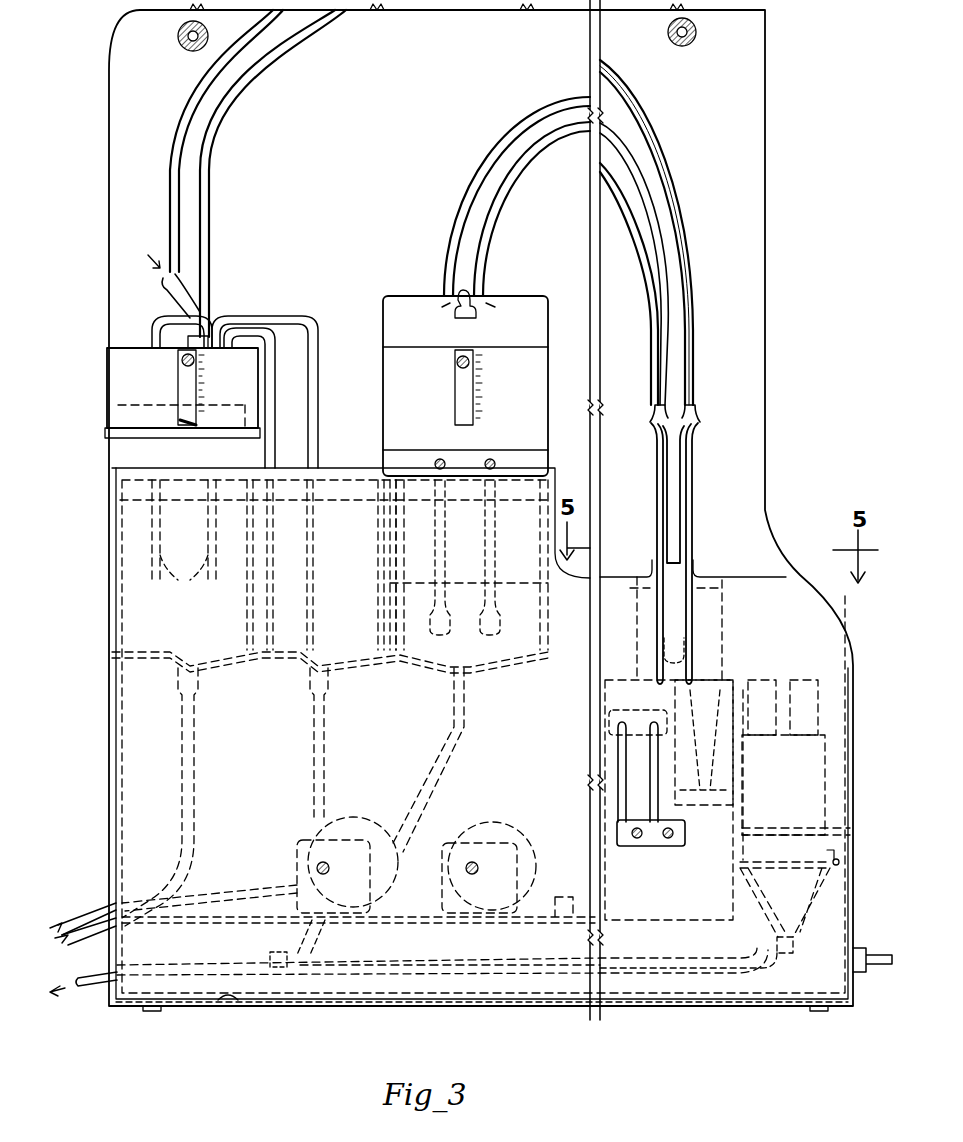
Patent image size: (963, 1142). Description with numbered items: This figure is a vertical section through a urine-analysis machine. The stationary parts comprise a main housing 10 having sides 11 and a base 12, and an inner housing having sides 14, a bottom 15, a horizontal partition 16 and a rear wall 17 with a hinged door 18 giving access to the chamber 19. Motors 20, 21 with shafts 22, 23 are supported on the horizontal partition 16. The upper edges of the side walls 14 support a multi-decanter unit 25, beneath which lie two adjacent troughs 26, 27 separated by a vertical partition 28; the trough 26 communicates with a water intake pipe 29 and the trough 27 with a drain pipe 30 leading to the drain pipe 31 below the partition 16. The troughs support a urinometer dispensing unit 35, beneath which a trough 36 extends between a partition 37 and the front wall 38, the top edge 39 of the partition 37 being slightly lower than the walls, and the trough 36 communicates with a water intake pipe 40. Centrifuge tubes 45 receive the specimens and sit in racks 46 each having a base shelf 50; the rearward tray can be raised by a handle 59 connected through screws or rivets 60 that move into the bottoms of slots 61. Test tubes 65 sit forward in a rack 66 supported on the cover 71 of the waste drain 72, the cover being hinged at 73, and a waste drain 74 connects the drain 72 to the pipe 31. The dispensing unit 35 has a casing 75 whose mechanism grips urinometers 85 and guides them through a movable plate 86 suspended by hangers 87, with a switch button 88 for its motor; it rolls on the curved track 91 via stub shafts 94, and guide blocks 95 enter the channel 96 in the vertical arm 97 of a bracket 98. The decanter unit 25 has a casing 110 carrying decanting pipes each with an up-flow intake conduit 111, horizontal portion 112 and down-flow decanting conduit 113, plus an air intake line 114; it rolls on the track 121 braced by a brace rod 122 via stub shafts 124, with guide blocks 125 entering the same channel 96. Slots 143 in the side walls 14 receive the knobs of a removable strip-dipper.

The main housing 10 is at (705, 1012).
The sides 11 is at (410, 186).
The base 12 is at (287, 1008).
The sides 14 is at (135, 505).
The bottom 15 is at (230, 1010).
The horizontal partition 16 is at (490, 925).
The rear wall 17 is at (112, 610).
The hinged door 18 is at (118, 785).
The chamber 19 is at (128, 762).
The motor 20 is at (348, 818).
The motor 21 is at (497, 825).
The shaft 22 is at (316, 866).
The shaft 23 is at (466, 866).
The multi-decanter unit 25 is at (100, 398).
The trough 26 is at (130, 578).
The trough 27 is at (335, 497).
The vertical partition 28 is at (247, 603).
The water intake pipe 29 is at (194, 762).
The drain pipe 30 is at (325, 748).
The drain pipe 31 is at (100, 990).
The urinometer dispensing unit 35 is at (383, 300).
The trough 36 is at (460, 660).
The partition 37 is at (396, 583).
The front wall 38 is at (548, 620).
The top edge 39 is at (378, 497).
The water intake pipe 40 is at (458, 758).
The centrifuge tubes 45 is at (648, 600).
The racks 46 is at (728, 678).
The base shelf 50 is at (712, 790).
The handle 59 is at (609, 720).
The screws or rivets 60 is at (660, 848).
The slots 61 is at (620, 785).
The test tubes 65 is at (775, 716).
The rack 66 is at (820, 798).
The cover 71 is at (848, 833).
The waste drain 72 is at (815, 898).
The hinge mounting 73 is at (842, 860).
The waste drain 74 is at (785, 968).
The casing 75 is at (400, 300).
The urinometers 85 is at (450, 555).
The vertically movable plate 86 is at (395, 600).
The hangers 87 is at (390, 538).
The switch button 88 is at (472, 305).
The track 91 is at (466, 200).
The stub shafts 94 is at (470, 365).
The guide blocks 95 is at (455, 398).
The channel 96 is at (680, 472).
The vertical arm 97 is at (692, 510).
The bracket 98 is at (668, 643).
The casing 110 is at (107, 373).
The up-flow intake conduit 111 is at (184, 568).
The horizontal portion 112 is at (250, 318).
The down-flow decanting conduit 113 is at (278, 386).
The air intake line 114 is at (180, 285).
The track 121 is at (200, 163).
The brace rod 122 is at (190, 52).
The stub shafts 124 is at (181, 360).
The guide blocks 125 is at (200, 376).
The slots 143 is at (653, 568).